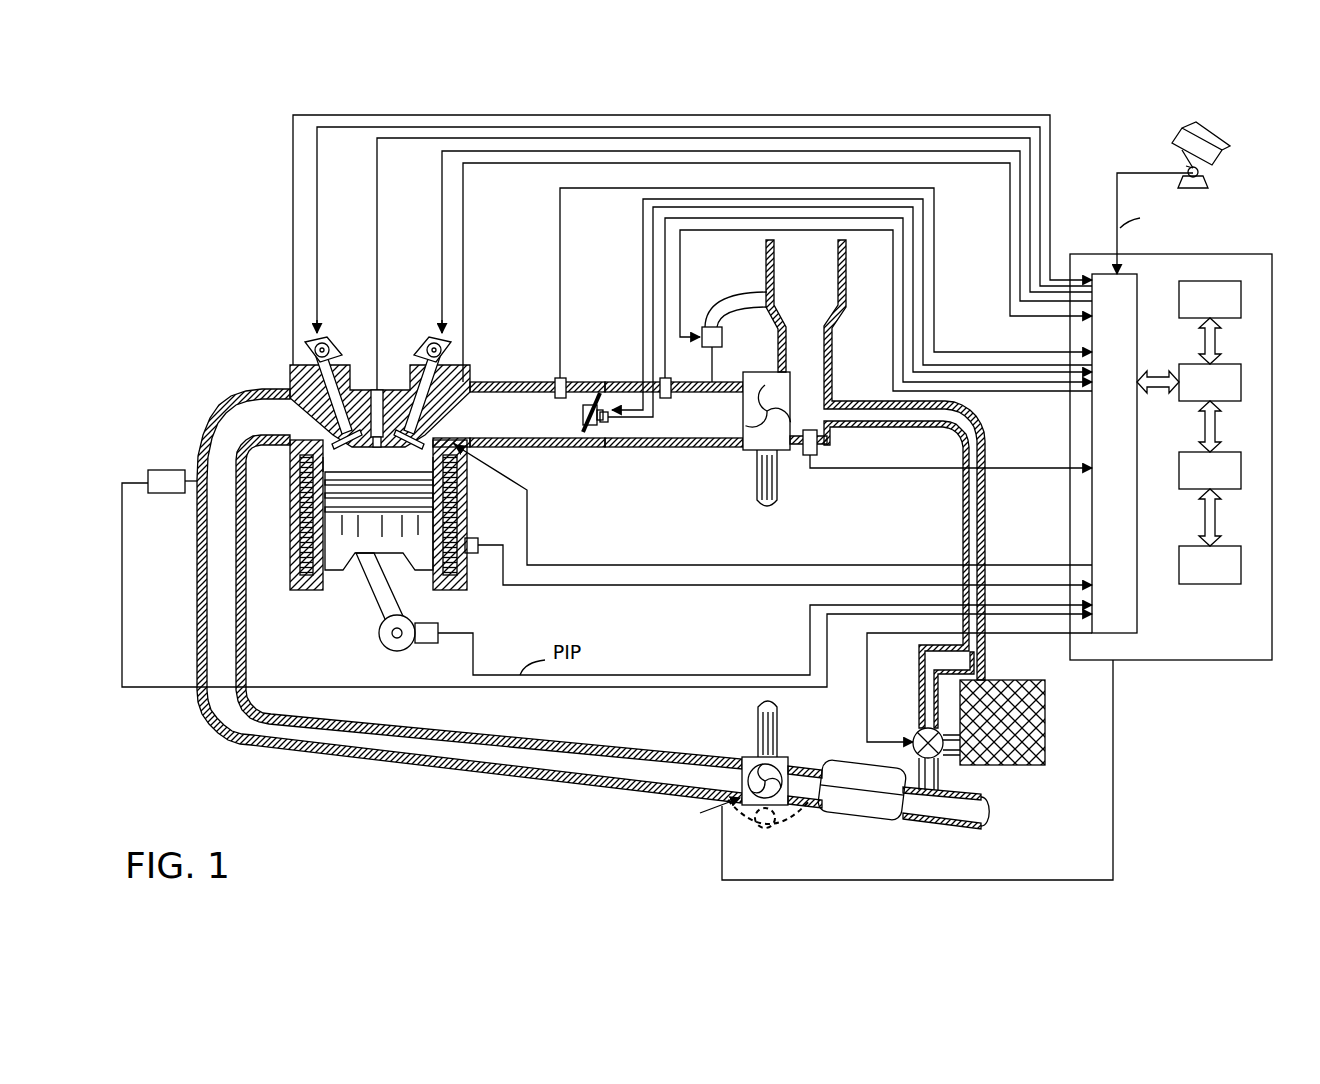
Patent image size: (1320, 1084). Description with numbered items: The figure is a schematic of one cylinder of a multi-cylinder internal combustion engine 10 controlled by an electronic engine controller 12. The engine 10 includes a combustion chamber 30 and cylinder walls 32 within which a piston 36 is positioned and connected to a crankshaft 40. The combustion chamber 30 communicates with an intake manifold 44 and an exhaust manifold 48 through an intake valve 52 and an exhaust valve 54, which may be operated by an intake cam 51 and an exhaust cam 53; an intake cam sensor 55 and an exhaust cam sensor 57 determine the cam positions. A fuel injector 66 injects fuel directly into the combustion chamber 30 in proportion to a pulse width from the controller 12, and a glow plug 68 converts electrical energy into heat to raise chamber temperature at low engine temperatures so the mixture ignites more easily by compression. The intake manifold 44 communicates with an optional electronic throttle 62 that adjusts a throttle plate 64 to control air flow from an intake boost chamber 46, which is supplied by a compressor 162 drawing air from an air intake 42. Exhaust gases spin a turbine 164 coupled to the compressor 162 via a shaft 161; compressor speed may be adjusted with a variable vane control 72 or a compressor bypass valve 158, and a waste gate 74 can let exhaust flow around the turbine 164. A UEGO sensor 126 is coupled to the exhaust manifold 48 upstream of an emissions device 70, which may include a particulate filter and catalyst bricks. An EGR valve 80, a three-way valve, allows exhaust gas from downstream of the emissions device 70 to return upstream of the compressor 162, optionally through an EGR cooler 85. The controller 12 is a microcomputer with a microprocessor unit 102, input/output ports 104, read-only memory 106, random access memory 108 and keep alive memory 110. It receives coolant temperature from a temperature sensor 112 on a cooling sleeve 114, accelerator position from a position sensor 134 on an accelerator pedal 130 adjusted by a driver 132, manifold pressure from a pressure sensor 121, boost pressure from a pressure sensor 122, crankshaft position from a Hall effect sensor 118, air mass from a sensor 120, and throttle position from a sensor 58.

The internal combustion engine 10 is at (232, 326).
The electronic engine controller 12 is at (1192, 441).
The combustion chamber 30 is at (310, 536).
The cylinder walls 32 is at (330, 583).
The piston 36 is at (363, 540).
The crankshaft 40 is at (387, 649).
The air intake 42 is at (875, 484).
The intake manifold 44 is at (537, 414).
The intake boost chamber 46 is at (674, 414).
The exhaust manifold 48 is at (470, 596).
The intake cam 51 is at (437, 331).
The intake valve 52 is at (410, 429).
The exhaust cam 53 is at (322, 331).
The exhaust valve 54 is at (340, 420).
The intake cam sensor 55 is at (447, 356).
The exhaust cam sensor 57 is at (305, 348).
The throttle position sensor 58 is at (610, 420).
The electronic throttle 62 is at (587, 403).
The throttle plate 64 is at (596, 388).
The fuel injector 66 is at (373, 420).
The glow plug 68 is at (447, 455).
The emissions device 70 is at (840, 813).
The variable vane control 72 is at (698, 813).
The waste gate 74 is at (770, 829).
The EGR valve 80 is at (917, 735).
The EGR cooler 85 is at (1045, 714).
The microprocessor unit 102 is at (1245, 371).
The input/output ports 104 is at (1140, 278).
The read-only memory 106 is at (1245, 287).
The random access memory 108 is at (1245, 463).
The keep alive memory 110 is at (1245, 553).
The temperature sensor 112 is at (478, 541).
The cooling sleeve 114 is at (300, 512).
The Hall effect sensor 118 is at (421, 646).
The air mass sensor 120 is at (817, 447).
The pressure sensor 121 is at (554, 380).
The pressure sensor 122 is at (672, 380).
The UEGO sensor 126 is at (148, 478).
The accelerator pedal 130 is at (1212, 190).
The driver 132 is at (1225, 141).
The position sensor 134 is at (1210, 181).
The compressor bypass valve 158 is at (708, 326).
The shaft 161 is at (757, 490).
The compressor 162 is at (743, 449).
The turbine 164 is at (742, 760).